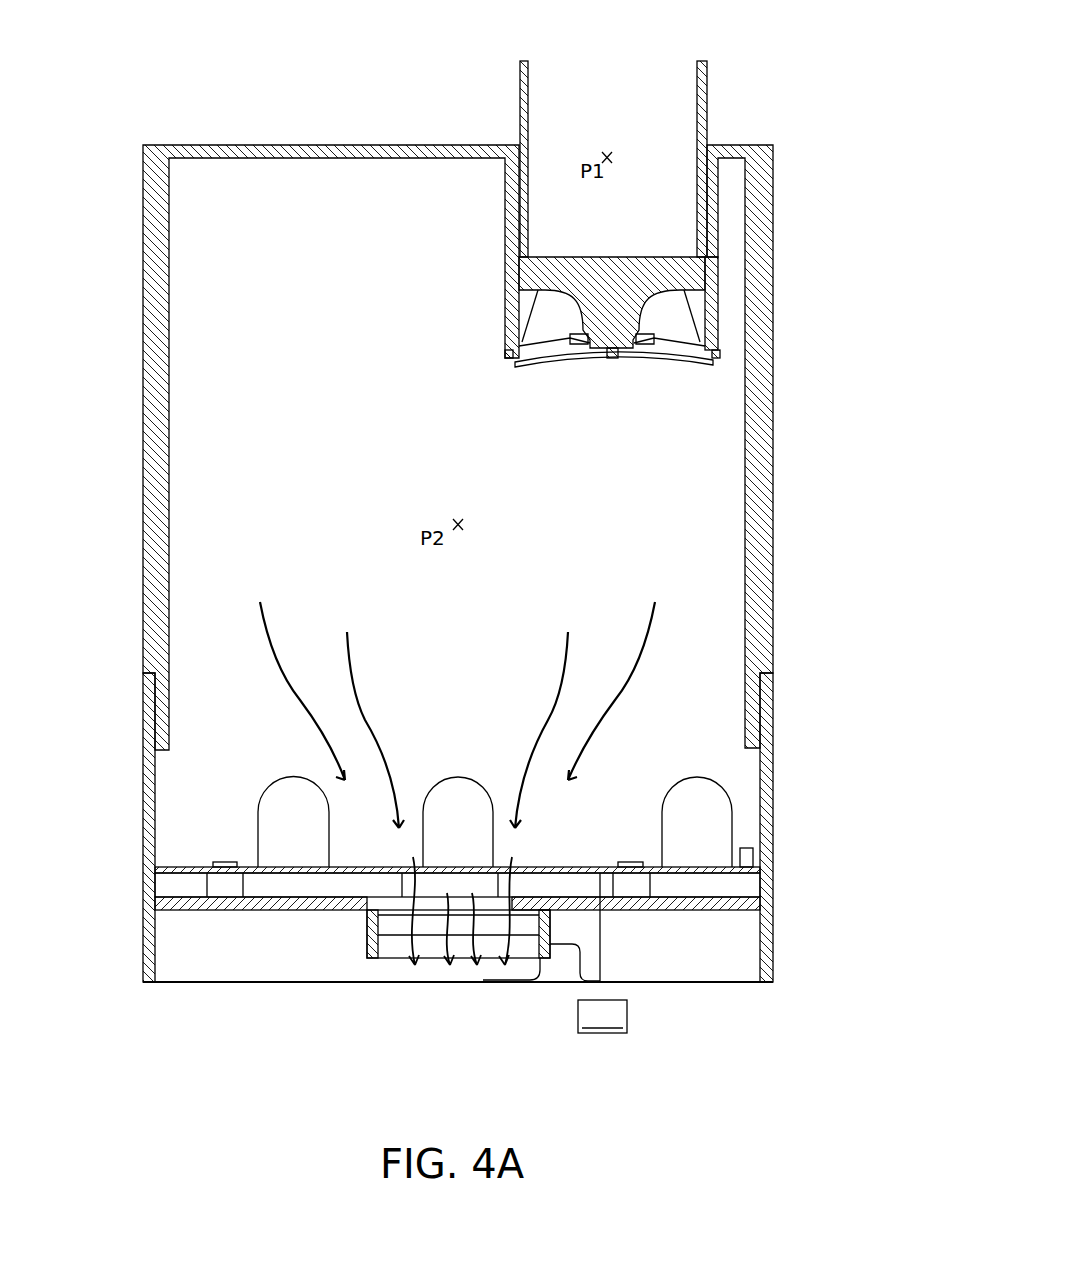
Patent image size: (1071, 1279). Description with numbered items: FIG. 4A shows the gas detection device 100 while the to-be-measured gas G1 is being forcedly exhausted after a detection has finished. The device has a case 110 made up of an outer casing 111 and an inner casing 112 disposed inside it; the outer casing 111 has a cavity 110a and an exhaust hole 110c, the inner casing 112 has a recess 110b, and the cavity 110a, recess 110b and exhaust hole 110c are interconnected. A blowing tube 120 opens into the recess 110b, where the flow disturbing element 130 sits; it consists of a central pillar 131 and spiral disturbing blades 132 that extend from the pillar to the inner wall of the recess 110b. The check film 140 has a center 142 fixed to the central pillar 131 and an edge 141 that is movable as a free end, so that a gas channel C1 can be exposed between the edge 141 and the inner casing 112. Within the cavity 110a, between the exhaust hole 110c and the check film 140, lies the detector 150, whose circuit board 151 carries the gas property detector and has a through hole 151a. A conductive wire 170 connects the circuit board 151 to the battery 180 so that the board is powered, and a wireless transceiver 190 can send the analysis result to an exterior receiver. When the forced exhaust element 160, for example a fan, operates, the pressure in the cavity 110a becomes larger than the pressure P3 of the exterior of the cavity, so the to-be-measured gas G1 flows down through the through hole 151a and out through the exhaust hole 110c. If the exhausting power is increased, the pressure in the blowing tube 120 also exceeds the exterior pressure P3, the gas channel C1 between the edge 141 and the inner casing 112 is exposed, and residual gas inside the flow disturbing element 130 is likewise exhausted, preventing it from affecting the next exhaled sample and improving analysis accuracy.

The gas detection device 100 is at (464, 521).
The case 110 is at (512, 521).
The cavity 110a is at (710, 485).
The recess 110b is at (527, 208).
The exhaust hole 110c is at (405, 877).
The outer casing 111 is at (762, 332).
The inner casing 112 is at (720, 344).
The blowing tube 120 is at (707, 97).
The flow disturbing element 130 is at (700, 289).
The central pillar 131 is at (609, 265).
The disturbing blades 132 is at (565, 315).
The check film 140 is at (698, 414).
The edge 141 is at (692, 364).
The center 142 is at (623, 364).
The gas channel C1 is at (716, 364).
The detector 150 is at (459, 947).
The circuit board 151 is at (668, 877).
The through hole 151a is at (427, 949).
The forced exhaust element 160 is at (545, 960).
The to-be-measured gas G1 is at (528, 948).
The conductive wire 170 is at (608, 960).
The battery 180 is at (600, 985).
The wireless transceiver 190 is at (745, 858).
The pressure of the exterior of the cavity P3 is at (386, 951).